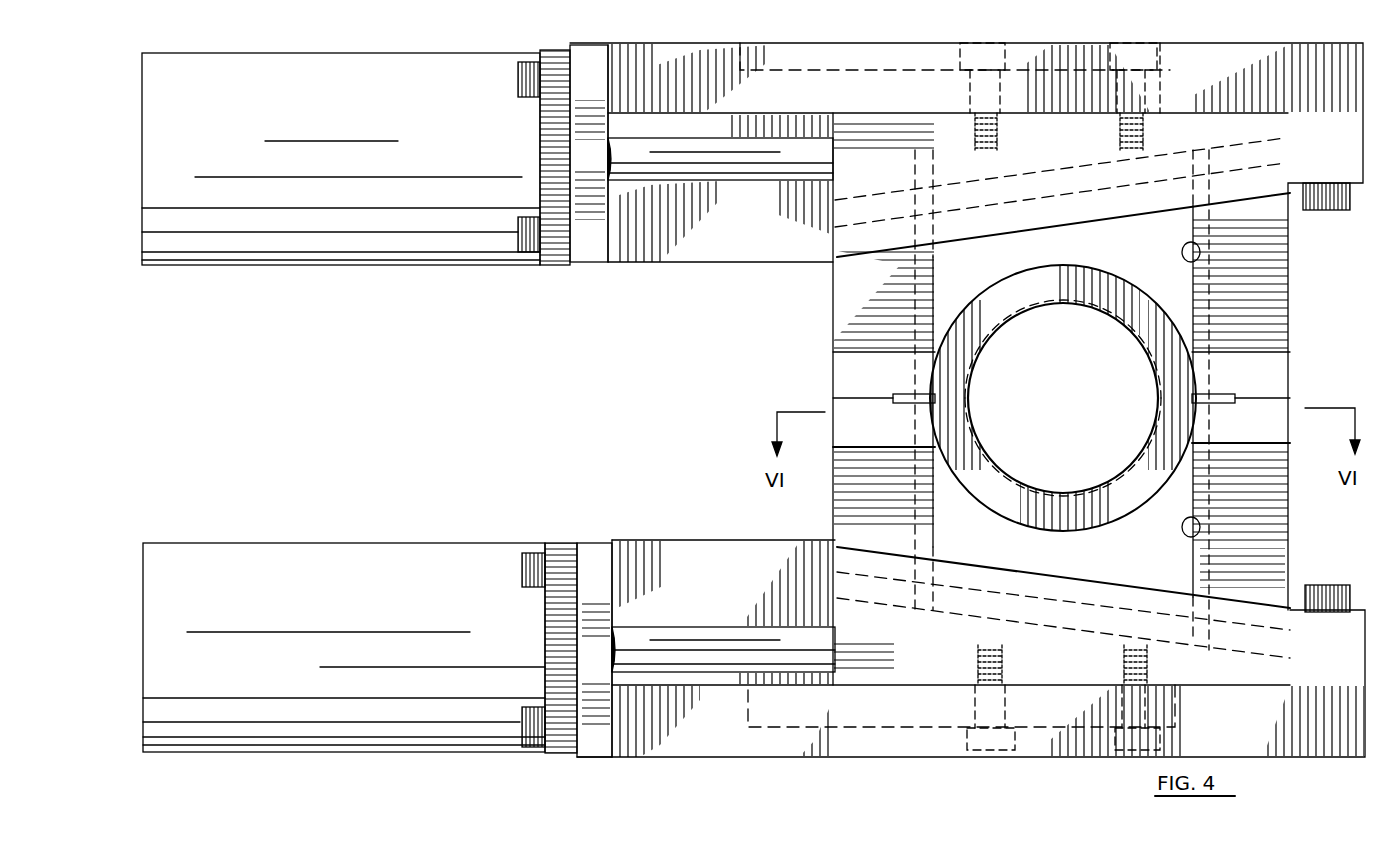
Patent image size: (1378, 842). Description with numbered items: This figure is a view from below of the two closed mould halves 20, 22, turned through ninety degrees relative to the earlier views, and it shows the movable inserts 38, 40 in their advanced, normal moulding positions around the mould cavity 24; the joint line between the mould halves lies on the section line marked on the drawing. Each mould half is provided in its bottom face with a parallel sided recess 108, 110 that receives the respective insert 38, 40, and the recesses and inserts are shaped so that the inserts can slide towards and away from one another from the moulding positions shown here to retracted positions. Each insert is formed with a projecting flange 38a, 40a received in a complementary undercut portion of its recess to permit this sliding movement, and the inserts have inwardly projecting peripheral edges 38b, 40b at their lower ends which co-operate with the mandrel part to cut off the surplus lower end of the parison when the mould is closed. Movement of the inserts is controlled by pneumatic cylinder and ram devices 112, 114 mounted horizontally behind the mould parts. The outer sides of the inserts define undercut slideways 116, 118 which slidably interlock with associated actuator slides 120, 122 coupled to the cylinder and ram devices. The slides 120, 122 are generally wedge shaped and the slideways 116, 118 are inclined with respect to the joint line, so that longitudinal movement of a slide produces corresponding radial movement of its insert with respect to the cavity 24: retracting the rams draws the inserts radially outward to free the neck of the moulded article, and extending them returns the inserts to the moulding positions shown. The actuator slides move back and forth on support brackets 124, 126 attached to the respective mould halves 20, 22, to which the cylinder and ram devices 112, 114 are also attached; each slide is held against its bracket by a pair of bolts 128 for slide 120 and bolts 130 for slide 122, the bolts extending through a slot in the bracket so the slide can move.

The mould half 20 is at (1300, 306).
The mould half 22 is at (1300, 503).
The mould cavity 24 is at (1064, 400).
The movable insert 38 is at (1063, 400).
The projecting flange 38a is at (1200, 323).
The inwardly projecting peripheral edge 38b is at (1048, 303).
The movable insert 40 is at (1063, 588).
The projecting flange 40a is at (1200, 580).
The inwardly projecting peripheral edge 40b is at (1040, 492).
The recess 108 is at (1200, 262).
The recess 110 is at (1200, 535).
The pneumatic cylinder and ram device 112 is at (442, 222).
The pneumatic cylinder and ram device 114 is at (453, 568).
The undercut slideway 116 is at (1088, 198).
The undercut slideway 118 is at (992, 585).
The actuator slide 120 is at (761, 159).
The actuator slide 122 is at (773, 647).
The support bracket 124 is at (820, 62).
The support bracket 126 is at (706, 730).
The bolts 128 is at (1130, 50).
The bolts 130 is at (1112, 745).